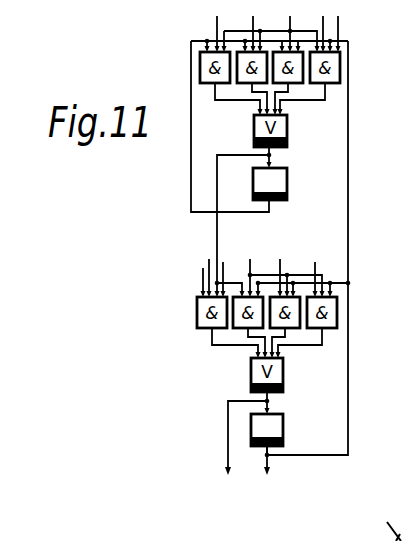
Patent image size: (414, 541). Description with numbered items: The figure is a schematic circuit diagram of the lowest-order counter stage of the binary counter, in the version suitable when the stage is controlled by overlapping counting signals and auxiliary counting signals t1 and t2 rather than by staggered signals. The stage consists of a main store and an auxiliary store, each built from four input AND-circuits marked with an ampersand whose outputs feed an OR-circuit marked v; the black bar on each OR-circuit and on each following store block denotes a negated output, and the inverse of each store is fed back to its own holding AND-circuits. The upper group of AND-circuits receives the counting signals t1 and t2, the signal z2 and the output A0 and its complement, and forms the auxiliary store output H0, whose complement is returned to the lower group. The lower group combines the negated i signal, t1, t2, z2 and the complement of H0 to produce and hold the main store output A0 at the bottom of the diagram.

The counting signal t1 is at (281, 243).
The auxiliary counting signal t2 is at (199, 243).
The counting enable signal z2 is at (257, 132).
The inverted signal i is at (254, 243).
The auxiliary store output H0 is at (299, 153).
The main store output A0 is at (213, 463).